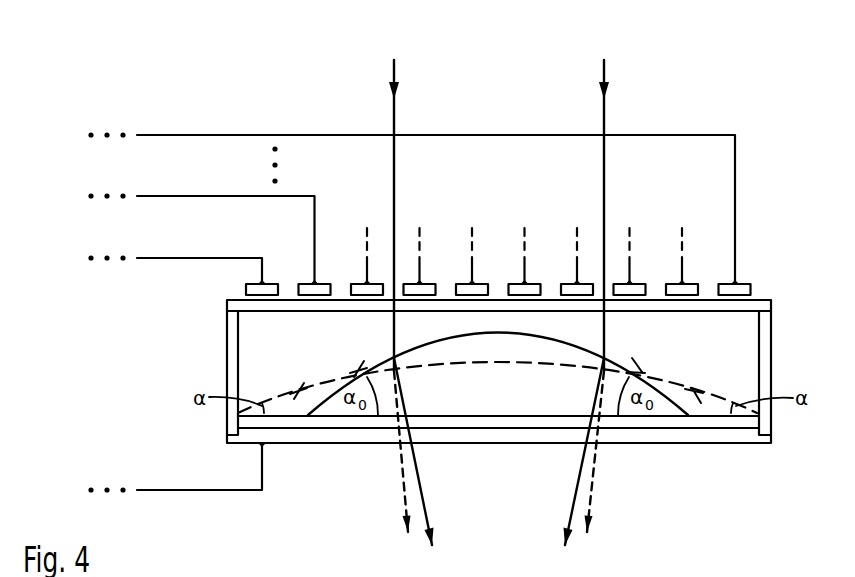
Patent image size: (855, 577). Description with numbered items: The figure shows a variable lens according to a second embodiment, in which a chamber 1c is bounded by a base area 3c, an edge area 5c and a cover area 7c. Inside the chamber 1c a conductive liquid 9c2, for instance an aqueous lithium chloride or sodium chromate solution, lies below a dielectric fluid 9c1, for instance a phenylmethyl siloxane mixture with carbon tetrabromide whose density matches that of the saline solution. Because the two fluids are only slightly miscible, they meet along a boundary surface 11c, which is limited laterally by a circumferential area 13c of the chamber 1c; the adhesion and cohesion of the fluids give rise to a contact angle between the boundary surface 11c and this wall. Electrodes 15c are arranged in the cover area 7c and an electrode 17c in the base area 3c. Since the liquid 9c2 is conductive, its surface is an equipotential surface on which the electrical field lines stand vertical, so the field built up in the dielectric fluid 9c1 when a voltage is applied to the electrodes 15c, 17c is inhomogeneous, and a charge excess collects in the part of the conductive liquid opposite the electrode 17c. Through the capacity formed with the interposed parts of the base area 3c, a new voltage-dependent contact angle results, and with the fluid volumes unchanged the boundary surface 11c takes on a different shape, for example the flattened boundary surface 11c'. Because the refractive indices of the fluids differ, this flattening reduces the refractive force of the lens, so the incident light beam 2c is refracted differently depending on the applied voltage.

The chamber 1c is at (375, 462).
The light beam 2c is at (607, 119).
The base area 3c is at (290, 423).
The edge area 5c is at (232, 348).
The cover area 7c is at (232, 305).
The dielectric fluid 9c1 is at (285, 350).
The conductive liquid 9c2 is at (502, 405).
The boundary surface 11c is at (498, 414).
The boundary surface (changed shape) 11c' is at (497, 426).
The circumferential area 13c is at (693, 416).
The electrodes 15c is at (723, 285).
The electrode 17c is at (330, 437).